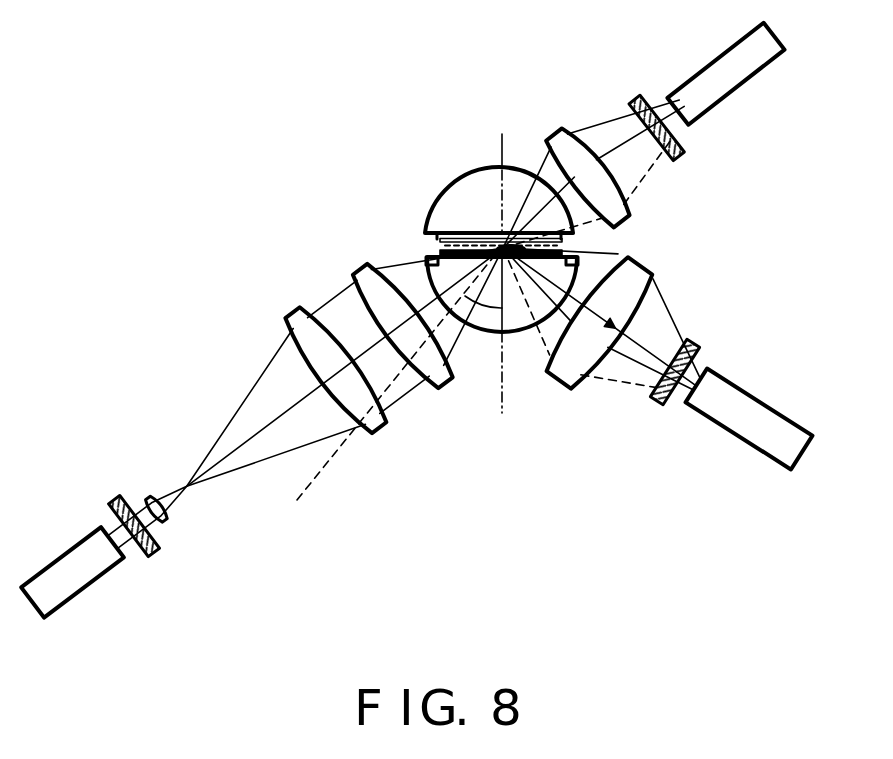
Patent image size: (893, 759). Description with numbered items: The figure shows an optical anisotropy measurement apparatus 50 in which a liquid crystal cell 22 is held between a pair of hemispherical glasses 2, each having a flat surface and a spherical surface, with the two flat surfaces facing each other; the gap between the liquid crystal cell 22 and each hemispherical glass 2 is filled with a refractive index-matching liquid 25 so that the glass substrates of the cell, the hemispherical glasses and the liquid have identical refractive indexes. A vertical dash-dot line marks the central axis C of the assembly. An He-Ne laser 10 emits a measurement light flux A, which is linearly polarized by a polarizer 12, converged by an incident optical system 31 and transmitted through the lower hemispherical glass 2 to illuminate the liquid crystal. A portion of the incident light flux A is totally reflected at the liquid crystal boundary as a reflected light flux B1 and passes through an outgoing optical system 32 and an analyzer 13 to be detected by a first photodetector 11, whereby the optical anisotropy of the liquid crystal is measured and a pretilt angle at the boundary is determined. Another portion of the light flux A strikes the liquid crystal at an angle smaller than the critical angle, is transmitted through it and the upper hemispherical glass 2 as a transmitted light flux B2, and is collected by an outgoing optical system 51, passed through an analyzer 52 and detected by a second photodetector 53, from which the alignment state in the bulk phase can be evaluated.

The optical anisotropy measurement apparatus 50 is at (333, 120).
The hemispherical glass 2 is at (467, 171).
The liquid crystal cell 22 is at (458, 233).
The refractive index-matching liquid 25 is at (438, 250).
The central axis C is at (501, 148).
The measurement light flux A is at (248, 466).
The He-Ne laser 10 is at (90, 590).
The polarizer 12 is at (115, 495).
The incident optical system 31 is at (356, 272).
The reflected light beam B1 is at (665, 318).
The outgoing optical system 32 is at (640, 265).
The analyzer 13 is at (692, 340).
The photodetector (first photodetector) 11 is at (758, 452).
The transmitted light flux B2 is at (606, 120).
The outgoing optical system 51 is at (558, 128).
The analyzer 52 is at (640, 100).
The photodetector (second photodetector) 53 is at (757, 80).